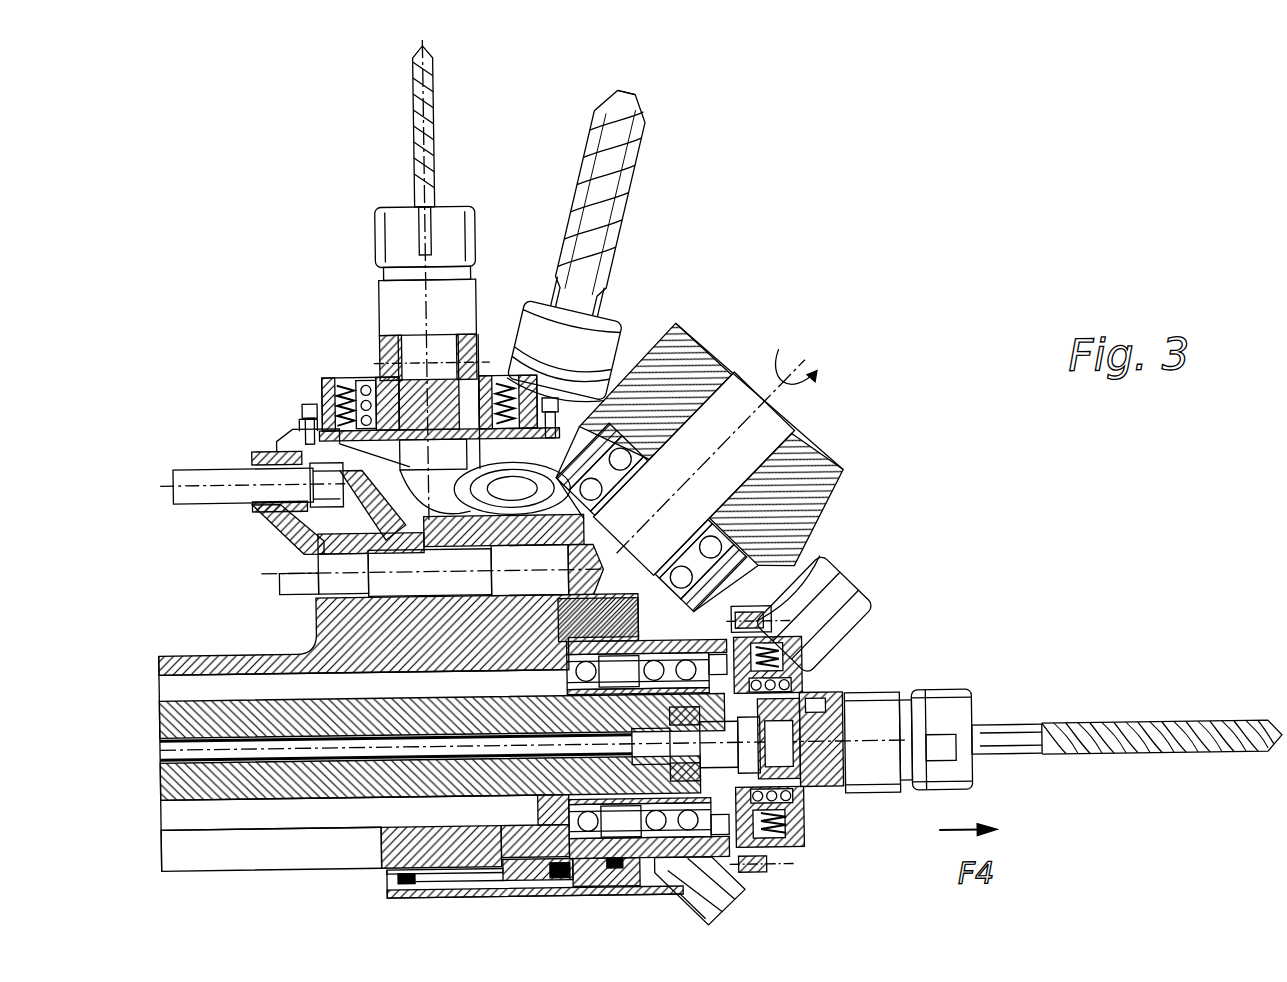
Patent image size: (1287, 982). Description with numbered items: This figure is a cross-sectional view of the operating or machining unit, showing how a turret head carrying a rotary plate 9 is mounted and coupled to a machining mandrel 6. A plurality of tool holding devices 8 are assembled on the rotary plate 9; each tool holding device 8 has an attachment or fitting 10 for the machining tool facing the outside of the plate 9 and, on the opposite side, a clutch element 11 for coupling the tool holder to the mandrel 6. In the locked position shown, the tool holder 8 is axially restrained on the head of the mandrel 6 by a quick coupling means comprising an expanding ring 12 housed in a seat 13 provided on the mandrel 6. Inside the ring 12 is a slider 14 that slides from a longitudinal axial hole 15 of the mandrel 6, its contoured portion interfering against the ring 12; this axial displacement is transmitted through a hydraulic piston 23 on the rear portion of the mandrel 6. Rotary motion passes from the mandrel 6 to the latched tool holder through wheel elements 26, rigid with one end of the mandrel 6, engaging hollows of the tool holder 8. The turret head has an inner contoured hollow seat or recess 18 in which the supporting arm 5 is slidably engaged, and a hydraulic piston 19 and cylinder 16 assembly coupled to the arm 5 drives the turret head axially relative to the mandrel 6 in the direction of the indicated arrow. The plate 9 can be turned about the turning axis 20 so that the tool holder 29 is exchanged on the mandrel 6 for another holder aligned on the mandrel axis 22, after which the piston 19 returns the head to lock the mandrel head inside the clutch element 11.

The supporting arm 5 is at (227, 852).
The mandrel 6 is at (192, 783).
The tool holding device 8 is at (812, 845).
The rotary plate 9 is at (293, 430).
The attachment or fitting 10 is at (835, 698).
The clutch element 11 is at (413, 455).
The expanding ring 12 is at (780, 858).
The seat 13 is at (728, 875).
The slider 14 is at (803, 687).
The longitudinal axial hole 15 is at (517, 767).
The cylinder 16 is at (480, 893).
The inner contoured hollow seat or recess 18 is at (387, 893).
The hydraulic piston 19 is at (473, 897).
The turning axis 20 is at (783, 383).
The axis of the mandrel 22 is at (268, 747).
The hydraulic piston 23 is at (335, 750).
The wheel elements 26 is at (790, 627).
The tool holder 29 is at (1013, 730).